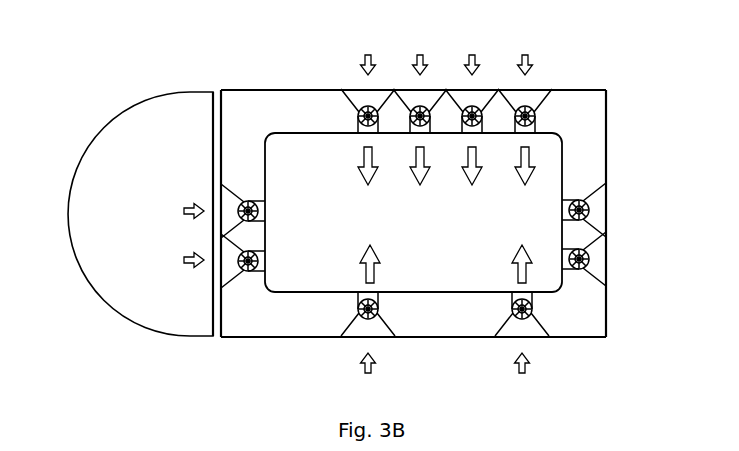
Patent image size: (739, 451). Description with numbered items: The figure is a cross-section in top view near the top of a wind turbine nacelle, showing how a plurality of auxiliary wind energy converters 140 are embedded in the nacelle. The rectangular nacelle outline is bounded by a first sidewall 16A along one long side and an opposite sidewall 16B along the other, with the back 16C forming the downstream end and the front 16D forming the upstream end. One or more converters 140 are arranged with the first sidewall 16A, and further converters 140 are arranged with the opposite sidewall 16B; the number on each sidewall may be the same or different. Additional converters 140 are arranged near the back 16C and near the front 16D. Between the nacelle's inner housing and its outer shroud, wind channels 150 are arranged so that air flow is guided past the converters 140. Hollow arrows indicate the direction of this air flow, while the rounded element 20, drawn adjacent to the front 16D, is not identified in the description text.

The object 20 is at (110, 147).
The auxiliary wind energy converter 140 is at (357, 116).
The wind channel 150 is at (533, 100).
The first sidewall 16A is at (586, 90).
The opposite sidewall 16B is at (573, 338).
The back 16C is at (606, 153).
The front 16D is at (218, 319).